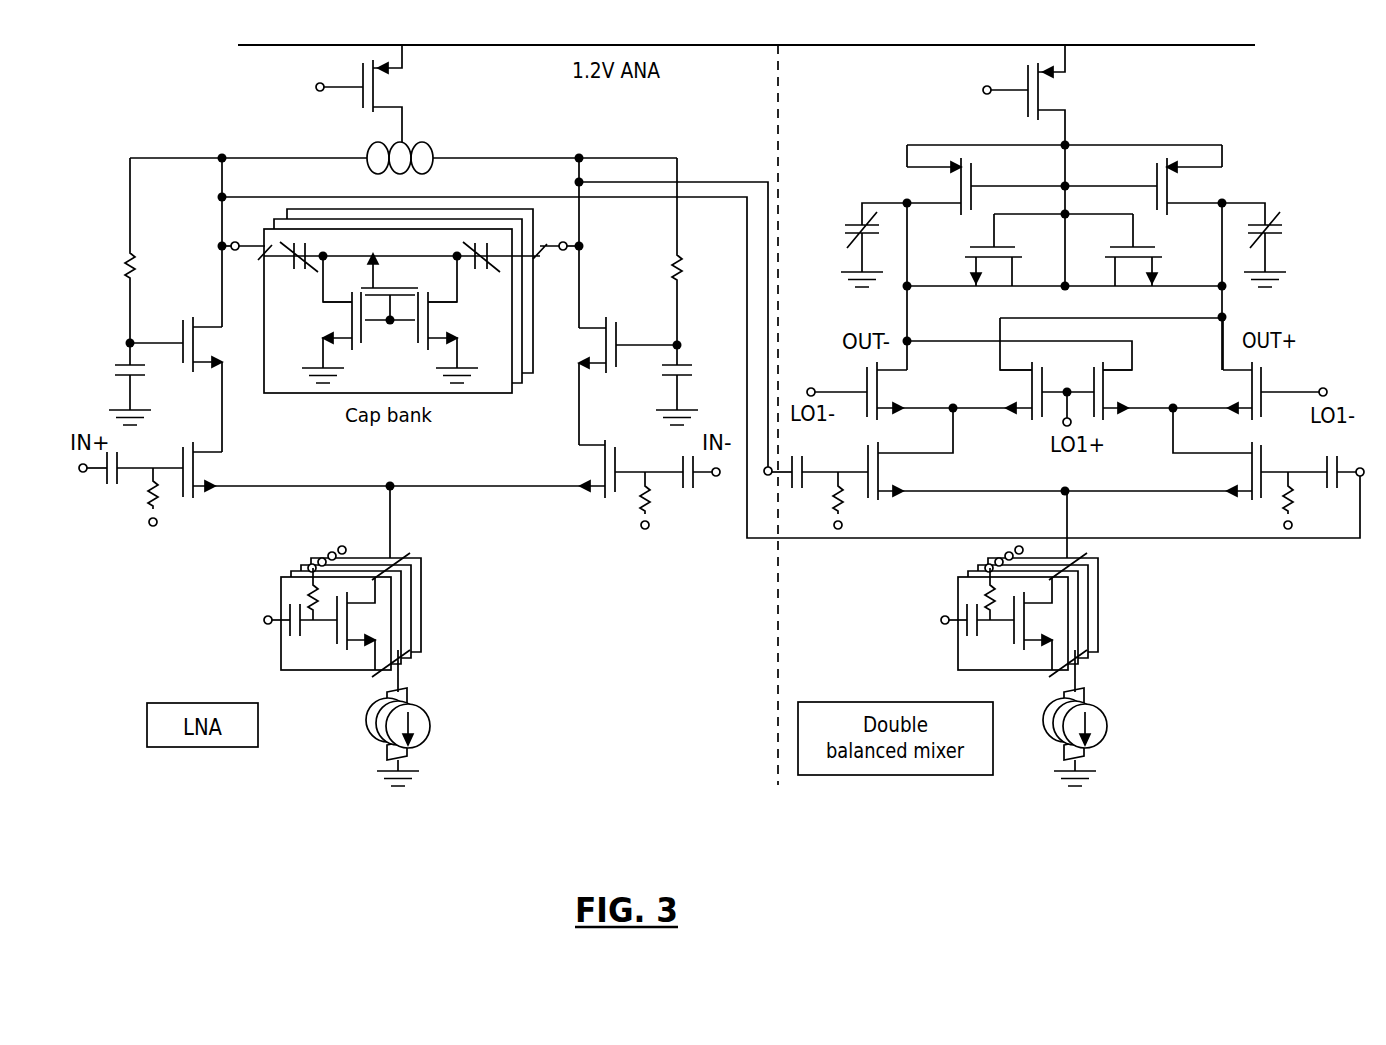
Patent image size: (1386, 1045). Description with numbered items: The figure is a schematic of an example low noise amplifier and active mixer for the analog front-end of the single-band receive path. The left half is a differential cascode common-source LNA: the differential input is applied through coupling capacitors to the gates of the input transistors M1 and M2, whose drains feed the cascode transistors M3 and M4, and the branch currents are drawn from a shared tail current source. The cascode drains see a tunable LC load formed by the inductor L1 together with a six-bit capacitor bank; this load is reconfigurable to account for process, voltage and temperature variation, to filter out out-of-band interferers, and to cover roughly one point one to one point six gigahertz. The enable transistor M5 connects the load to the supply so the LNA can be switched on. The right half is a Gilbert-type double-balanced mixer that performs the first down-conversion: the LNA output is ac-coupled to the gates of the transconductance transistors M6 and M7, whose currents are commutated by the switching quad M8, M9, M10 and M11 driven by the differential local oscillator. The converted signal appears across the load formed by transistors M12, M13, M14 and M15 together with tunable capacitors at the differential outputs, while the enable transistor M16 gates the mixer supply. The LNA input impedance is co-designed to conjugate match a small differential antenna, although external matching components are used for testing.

The LNA input transistor M1 is at (286, 470).
The LNA input transistor M2 is at (502, 469).
The LNA cascode transistor M3 is at (212, 344).
The LNA cascode transistor M4 is at (589, 345).
The LNA enable transistor M5 is at (332, 93).
The inductor L1 is at (386, 149).
The mixer input transistor M6 is at (933, 471).
The mixer input transistor M7 is at (1196, 471).
The mixer switching transistor M8 is at (880, 391).
The mixer switching transistor M9 is at (1023, 391).
The mixer switching transistor M10 is at (1133, 391).
The mixer switching transistor M11 is at (1250, 368).
The mixer load transistor M12 is at (993, 281).
The mixer load transistor M13 is at (1134, 281).
The mixer load transistor M14 is at (979, 186).
The mixer load transistor M15 is at (1150, 186).
The mixer enable transistor M16 is at (1004, 95).